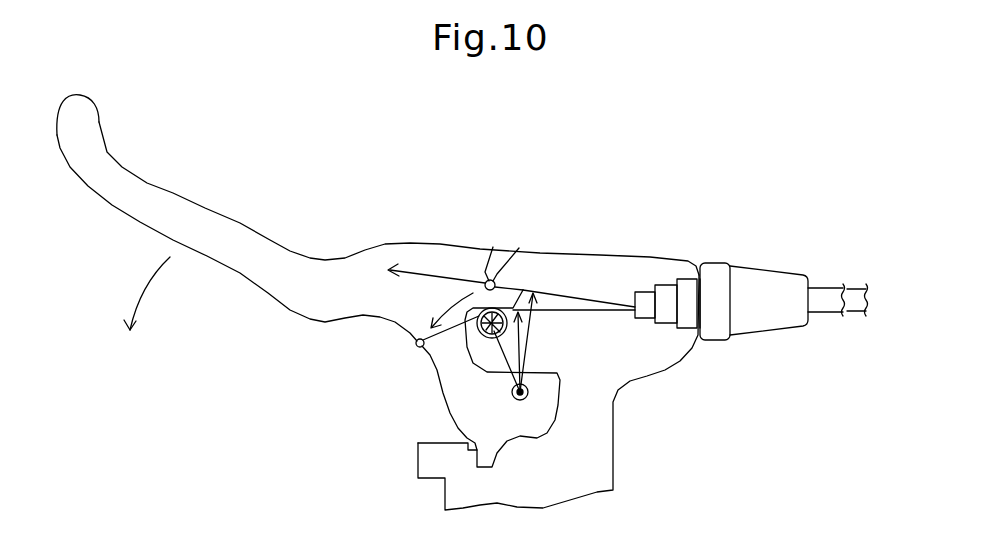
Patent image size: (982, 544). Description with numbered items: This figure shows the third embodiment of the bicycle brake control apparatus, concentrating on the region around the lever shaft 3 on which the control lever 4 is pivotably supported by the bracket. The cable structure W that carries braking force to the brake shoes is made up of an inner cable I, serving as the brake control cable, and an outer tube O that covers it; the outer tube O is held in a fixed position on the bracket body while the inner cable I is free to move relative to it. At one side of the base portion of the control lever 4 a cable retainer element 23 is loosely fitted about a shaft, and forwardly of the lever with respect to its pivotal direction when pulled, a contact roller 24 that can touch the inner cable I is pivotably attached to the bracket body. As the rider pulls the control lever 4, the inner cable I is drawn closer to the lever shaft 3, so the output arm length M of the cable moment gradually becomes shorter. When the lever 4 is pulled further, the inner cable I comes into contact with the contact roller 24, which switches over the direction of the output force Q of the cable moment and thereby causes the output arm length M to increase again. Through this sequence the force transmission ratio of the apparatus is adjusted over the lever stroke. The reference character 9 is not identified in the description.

The brake lever 9 is at (175, 186).
The control lever 4 is at (417, 180).
The lever shaft 3 is at (526, 398).
The cable retainer element 23 is at (503, 266).
The contact roller 24 is at (416, 346).
The output force Q is at (457, 283).
The output arm length M is at (503, 336).
The outer tube O is at (820, 318).
The inner cable I is at (860, 318).
The cable structure W is at (867, 418).